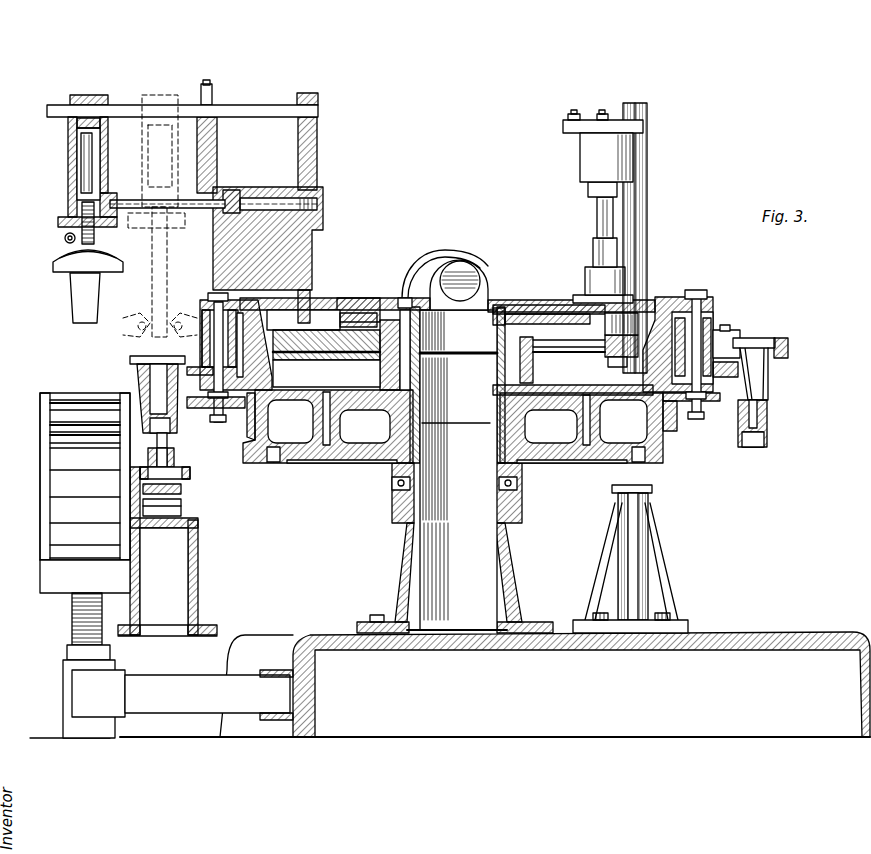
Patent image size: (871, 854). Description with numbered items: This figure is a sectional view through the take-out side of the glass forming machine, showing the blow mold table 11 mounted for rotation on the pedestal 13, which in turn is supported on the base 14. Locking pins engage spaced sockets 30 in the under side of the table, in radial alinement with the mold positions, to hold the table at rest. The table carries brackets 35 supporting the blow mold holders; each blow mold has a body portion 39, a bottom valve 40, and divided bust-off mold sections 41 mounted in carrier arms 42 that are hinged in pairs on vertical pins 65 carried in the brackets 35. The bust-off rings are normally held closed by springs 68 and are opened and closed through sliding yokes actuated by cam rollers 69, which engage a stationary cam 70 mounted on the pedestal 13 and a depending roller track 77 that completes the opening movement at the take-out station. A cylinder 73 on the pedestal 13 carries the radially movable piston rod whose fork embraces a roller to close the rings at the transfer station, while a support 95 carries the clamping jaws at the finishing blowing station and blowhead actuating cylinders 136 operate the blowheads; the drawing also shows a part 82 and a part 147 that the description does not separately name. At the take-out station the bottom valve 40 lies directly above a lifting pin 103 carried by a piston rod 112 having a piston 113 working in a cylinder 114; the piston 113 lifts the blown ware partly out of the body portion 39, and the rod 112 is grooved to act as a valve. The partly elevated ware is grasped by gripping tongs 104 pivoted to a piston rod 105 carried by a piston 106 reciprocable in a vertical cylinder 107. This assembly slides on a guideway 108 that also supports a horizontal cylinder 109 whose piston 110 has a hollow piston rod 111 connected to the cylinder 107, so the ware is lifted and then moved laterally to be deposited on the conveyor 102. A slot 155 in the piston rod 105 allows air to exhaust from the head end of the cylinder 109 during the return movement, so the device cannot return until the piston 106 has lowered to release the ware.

The blow mold table 11 is at (367, 453).
The pedestal 13 is at (455, 470).
The base 14 is at (450, 685).
The sockets 30 is at (640, 455).
The brackets 35 is at (573, 386).
The blow mold 39 is at (770, 392).
The bottom valve 40 is at (172, 425).
The bust-off mold sections 41 is at (773, 340).
The carrier arms 42 is at (789, 347).
The vertical pins 65 is at (697, 290).
The springs 68 is at (605, 355).
The cam rollers 69 is at (365, 320).
The stationary cam 70 is at (538, 307).
The cylinder 73 is at (464, 264).
The roller track 77 is at (337, 300).
The vertical shaft 82 is at (597, 251).
The support 95 is at (634, 235).
The conveyor 102 is at (57, 423).
The lifting pin 103 is at (162, 440).
The ware gripping tongs 104 is at (78, 272).
The piston rod 105 is at (85, 162).
The piston 106 is at (72, 136).
The cylinder 107 is at (72, 150).
The support or guideway 108 is at (117, 107).
The horizontal cylinder 109 is at (321, 197).
The piston 110 is at (234, 190).
The hollow piston rod 111 is at (137, 198).
The piston rod 112 is at (175, 478).
The piston 113 is at (182, 495).
The cylinder 114 is at (170, 510).
The blowhead actuating cylinders 136 is at (590, 157).
The spring 147 is at (63, 228).
The slot 155 is at (154, 216).